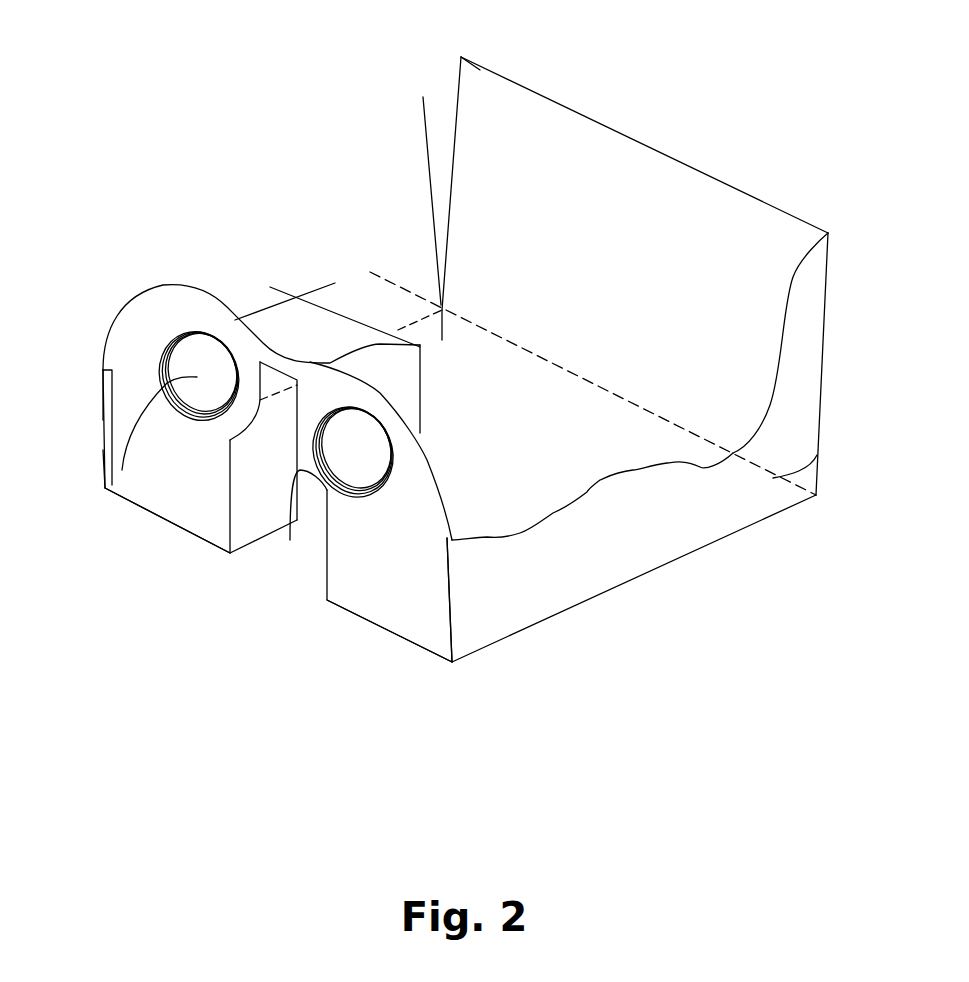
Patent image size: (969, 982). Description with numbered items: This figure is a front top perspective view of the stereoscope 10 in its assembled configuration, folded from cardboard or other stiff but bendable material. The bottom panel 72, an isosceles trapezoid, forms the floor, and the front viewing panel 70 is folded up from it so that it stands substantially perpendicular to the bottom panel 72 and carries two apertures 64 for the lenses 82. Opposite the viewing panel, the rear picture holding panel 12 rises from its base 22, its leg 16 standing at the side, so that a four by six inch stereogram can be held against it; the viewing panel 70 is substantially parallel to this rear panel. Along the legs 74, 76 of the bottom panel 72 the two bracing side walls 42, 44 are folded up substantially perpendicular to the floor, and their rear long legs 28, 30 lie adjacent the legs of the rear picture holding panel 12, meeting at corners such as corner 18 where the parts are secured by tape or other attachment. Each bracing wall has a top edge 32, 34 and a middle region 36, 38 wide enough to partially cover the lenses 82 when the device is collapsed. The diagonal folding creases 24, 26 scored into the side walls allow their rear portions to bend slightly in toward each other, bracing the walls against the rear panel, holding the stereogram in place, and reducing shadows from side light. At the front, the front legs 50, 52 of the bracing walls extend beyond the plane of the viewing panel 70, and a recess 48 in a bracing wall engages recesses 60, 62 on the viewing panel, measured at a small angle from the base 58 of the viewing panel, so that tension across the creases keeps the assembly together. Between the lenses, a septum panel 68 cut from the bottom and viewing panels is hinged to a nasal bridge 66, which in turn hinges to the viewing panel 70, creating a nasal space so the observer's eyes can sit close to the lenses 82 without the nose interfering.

The stereoscope 10 is at (762, 148).
The rear picture holding panel 12 is at (612, 162).
The leg of rear picture holding panel 16 is at (458, 95).
The corner 18 is at (818, 498).
The base of rear picture holding panel 22 is at (347, 287).
The diagonal folding crease 24 is at (400, 300).
The diagonal folding crease 26 is at (818, 440).
The long leg of bracing wall 28 is at (423, 97).
The long leg of bracing wall 30 is at (820, 367).
The top edge of bracing side wall 32 is at (365, 273).
The top edge of bracing side wall 34 is at (733, 453).
The middle region of bracing wall 36 is at (260, 325).
The middle region of bracing wall 38 is at (627, 470).
The bracing side wall 42 is at (247, 298).
The bracing side wall 44 is at (533, 572).
The recess 48 is at (440, 540).
The front leg of bracing side wall 50 is at (105, 405).
The front leg of bracing side wall 52 is at (448, 607).
The base of viewing panel 58 is at (150, 511).
The recess on viewing panel 60 is at (103, 370).
The recess on viewing panel 62 is at (453, 560).
The aperture 64 is at (103, 470).
The nasal bridge 66 is at (318, 337).
The septum panel 68 is at (353, 297).
The front viewing panel 70 is at (325, 520).
The bottom panel 72 is at (563, 475).
The leg of bottom panel 74 is at (353, 300).
The leg of bottom panel 76 is at (547, 620).
The lens 82 is at (178, 385).